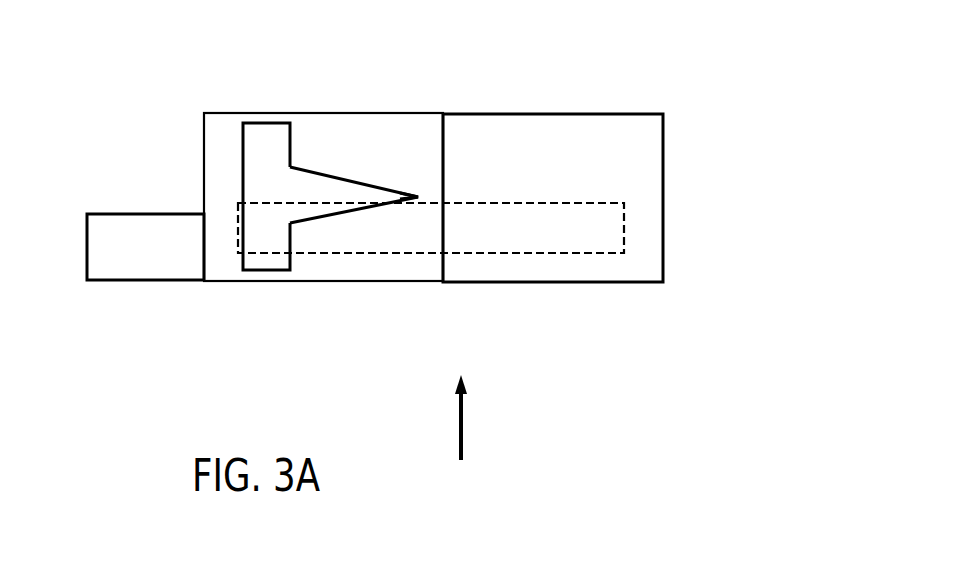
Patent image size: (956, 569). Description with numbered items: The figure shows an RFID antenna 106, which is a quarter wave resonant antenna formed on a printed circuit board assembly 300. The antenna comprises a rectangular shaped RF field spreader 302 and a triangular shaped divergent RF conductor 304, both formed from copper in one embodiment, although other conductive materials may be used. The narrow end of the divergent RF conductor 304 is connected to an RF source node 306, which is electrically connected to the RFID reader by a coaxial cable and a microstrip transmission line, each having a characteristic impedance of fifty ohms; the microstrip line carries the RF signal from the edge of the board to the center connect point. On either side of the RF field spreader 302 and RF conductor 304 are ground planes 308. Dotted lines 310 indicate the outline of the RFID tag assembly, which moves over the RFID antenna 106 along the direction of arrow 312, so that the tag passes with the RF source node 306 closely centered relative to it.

The RFID antenna 106 is at (565, 90).
The printed circuit board assembly 300 is at (675, 220).
The RF field spreader 302 is at (258, 122).
The divergent RF conductor 304 is at (360, 180).
The RF source node 306 is at (432, 190).
The ground planes 308 is at (173, 273).
The dotted lines 310 is at (593, 254).
The arrow 312 is at (473, 412).